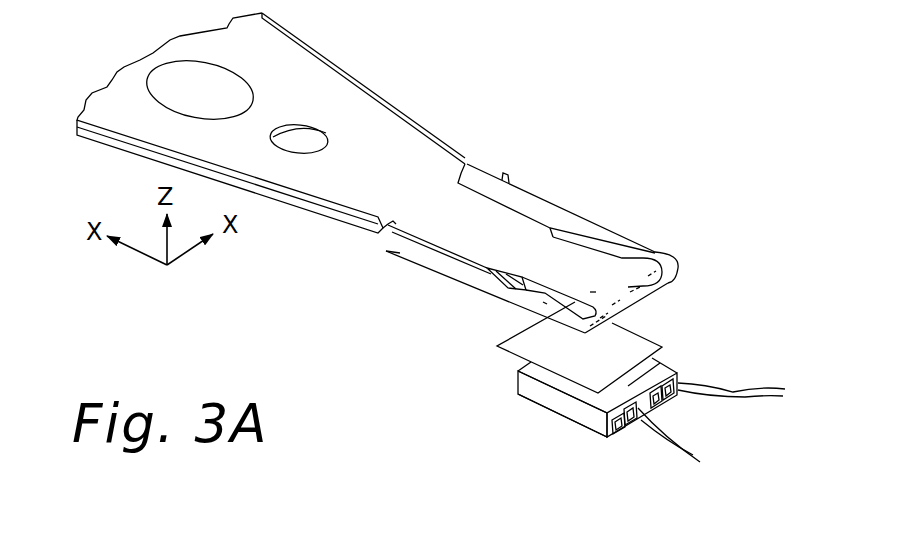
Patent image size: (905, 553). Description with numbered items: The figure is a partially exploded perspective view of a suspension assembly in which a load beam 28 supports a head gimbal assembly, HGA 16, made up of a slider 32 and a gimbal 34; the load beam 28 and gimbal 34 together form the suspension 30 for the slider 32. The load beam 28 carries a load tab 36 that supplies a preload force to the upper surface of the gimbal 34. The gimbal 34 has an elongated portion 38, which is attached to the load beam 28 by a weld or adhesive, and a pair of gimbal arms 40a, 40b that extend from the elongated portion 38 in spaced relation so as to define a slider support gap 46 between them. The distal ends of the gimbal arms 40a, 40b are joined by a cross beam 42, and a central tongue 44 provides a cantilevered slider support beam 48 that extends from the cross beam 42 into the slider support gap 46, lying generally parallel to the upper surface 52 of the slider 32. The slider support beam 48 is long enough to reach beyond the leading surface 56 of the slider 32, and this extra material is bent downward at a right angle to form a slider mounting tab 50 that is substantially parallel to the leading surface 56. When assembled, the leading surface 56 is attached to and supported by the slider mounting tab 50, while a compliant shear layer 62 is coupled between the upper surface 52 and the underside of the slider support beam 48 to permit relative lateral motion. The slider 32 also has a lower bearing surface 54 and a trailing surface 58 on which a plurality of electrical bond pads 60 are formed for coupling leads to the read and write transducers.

The head gimbal assembly (HGA) 16 is at (705, 234).
The load beam 28 is at (314, 39).
The flexure 30 is at (407, 87).
The slider 32 is at (566, 404).
The gimbal 34 is at (565, 203).
The load tab 36 is at (488, 237).
The elongated portion 38 is at (398, 250).
The gimbal arm 40a is at (612, 245).
The gimbal arm 40b is at (507, 303).
The cross beam 42 is at (655, 286).
The central tongue 44 is at (593, 292).
The slider support gap 46 is at (545, 303).
The slider support beam 48 is at (681, 256).
The slider mounting tab 50 is at (487, 269).
The upper surface 52 is at (667, 363).
The lower bearing surface 54 is at (601, 437).
The leading surface 56 is at (513, 380).
The trailing surface 58 is at (642, 408).
The electrical bond pads 60 is at (732, 426).
The compliant shear layer 62 is at (640, 327).